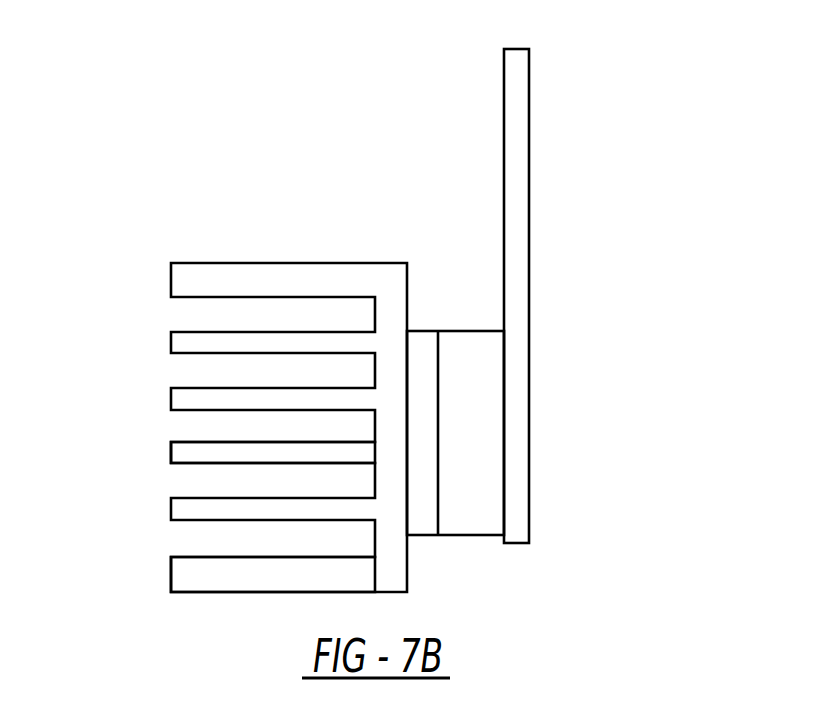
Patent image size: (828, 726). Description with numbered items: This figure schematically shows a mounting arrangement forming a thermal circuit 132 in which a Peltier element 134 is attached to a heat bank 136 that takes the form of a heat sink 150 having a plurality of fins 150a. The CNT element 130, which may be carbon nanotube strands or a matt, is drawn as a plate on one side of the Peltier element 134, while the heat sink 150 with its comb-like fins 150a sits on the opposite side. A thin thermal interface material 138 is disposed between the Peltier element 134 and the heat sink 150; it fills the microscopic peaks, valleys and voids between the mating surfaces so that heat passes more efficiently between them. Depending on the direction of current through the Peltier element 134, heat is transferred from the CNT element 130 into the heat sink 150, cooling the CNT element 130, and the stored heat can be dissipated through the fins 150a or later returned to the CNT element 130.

The CNT element 130 is at (529, 168).
The thermal circuit 132 is at (321, 140).
The Peltier element 134 is at (477, 330).
The heat bank 136 is at (196, 238).
The thermal interface material 138 is at (422, 535).
The heat sink 150 is at (202, 590).
The fins 150a is at (175, 453).